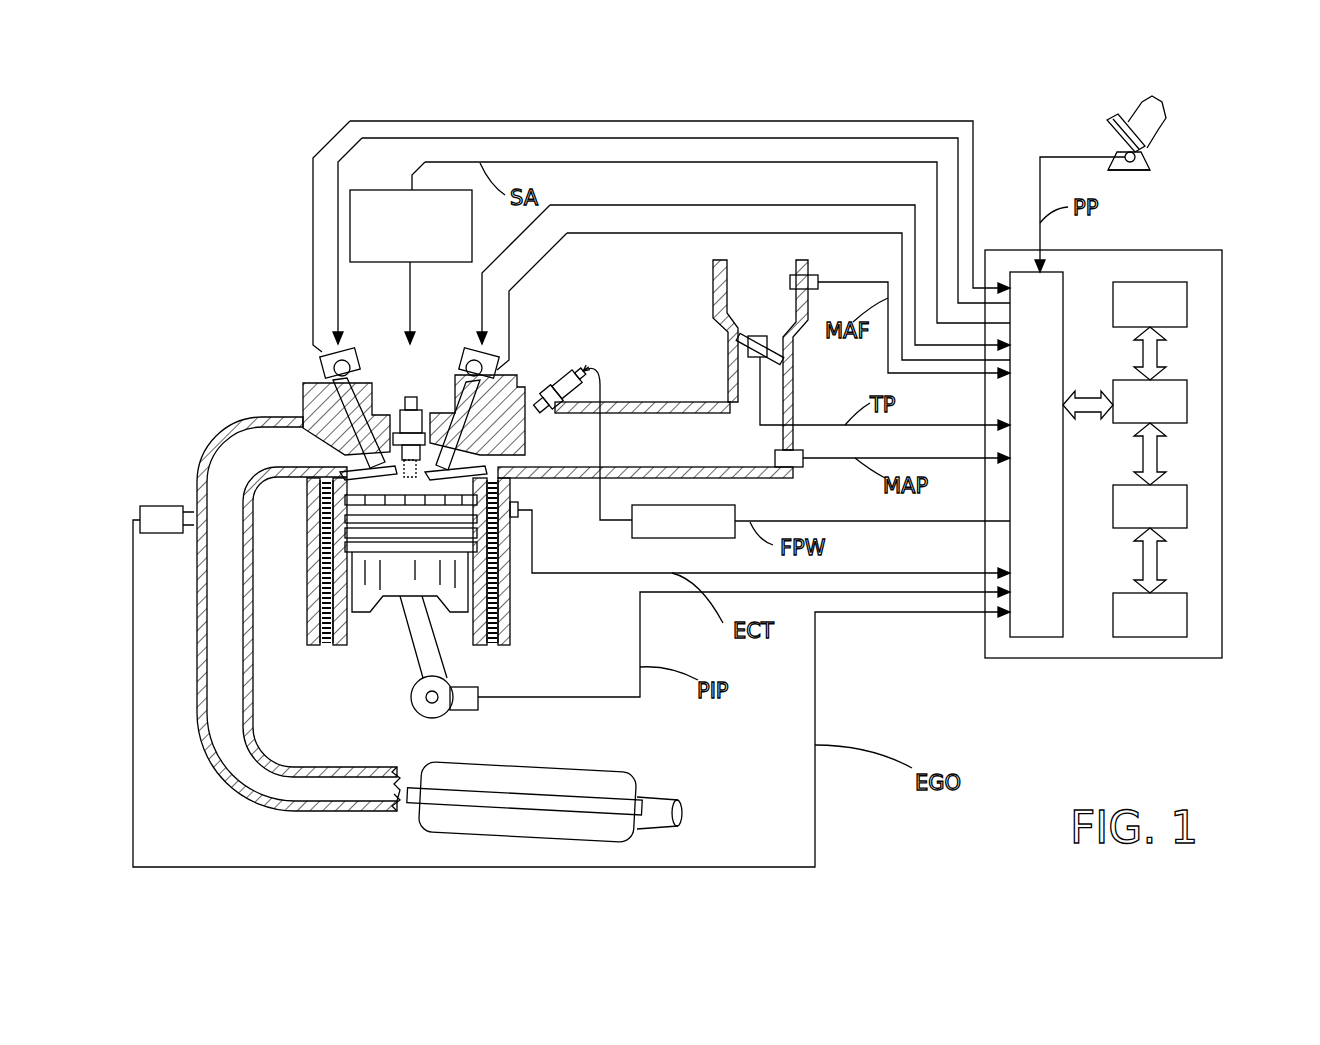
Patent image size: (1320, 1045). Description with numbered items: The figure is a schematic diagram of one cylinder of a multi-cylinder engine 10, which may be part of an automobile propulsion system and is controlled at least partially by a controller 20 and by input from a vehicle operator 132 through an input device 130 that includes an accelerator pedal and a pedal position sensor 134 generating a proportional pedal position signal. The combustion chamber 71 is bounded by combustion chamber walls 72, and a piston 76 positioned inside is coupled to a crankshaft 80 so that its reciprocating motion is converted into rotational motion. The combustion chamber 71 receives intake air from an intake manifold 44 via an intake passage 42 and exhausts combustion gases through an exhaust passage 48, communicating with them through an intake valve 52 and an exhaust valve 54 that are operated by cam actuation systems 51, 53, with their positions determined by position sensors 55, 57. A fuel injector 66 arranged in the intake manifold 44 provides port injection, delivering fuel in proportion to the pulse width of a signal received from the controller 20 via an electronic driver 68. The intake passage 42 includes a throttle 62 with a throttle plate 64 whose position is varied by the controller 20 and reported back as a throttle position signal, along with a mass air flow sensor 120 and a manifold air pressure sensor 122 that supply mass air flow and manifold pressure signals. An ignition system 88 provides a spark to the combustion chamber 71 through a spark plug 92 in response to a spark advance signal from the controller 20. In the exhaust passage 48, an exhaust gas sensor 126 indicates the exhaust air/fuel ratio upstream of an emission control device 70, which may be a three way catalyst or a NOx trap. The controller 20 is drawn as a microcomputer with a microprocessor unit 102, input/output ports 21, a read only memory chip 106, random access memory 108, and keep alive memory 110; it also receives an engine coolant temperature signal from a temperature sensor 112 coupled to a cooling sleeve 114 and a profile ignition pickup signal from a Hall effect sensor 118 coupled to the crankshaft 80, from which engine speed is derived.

The engine 10 is at (232, 333).
The controller 20 is at (1210, 250).
The input/output ports 21 is at (1065, 285).
The intake passage 42 is at (772, 311).
The intake manifold 44 is at (705, 456).
The exhaust passage 48 is at (285, 461).
The cam actuation system 51 is at (463, 347).
The intake valve 52 is at (490, 463).
The cam actuation system 53 is at (360, 343).
The exhaust valve 54 is at (362, 463).
The position sensor 55 is at (497, 366).
The position sensor 57 is at (323, 352).
The throttle 62 is at (792, 340).
The throttle plate 64 is at (740, 340).
The fuel injector 66 is at (555, 385).
The electronic driver 68 is at (634, 540).
The emission control device 70 is at (593, 768).
The combustion chamber 71 is at (408, 487).
The combustion chamber walls 72 is at (350, 630).
The piston 76 is at (412, 603).
The crankshaft 80 is at (422, 720).
The ignition system 88 is at (362, 190).
The spark plug 92 is at (415, 398).
The microprocessor unit 102 is at (1187, 396).
The read only memory chip 106 is at (1187, 300).
The random access memory 108 is at (1187, 505).
The keep alive memory 110 is at (1187, 612).
The temperature sensor 112 is at (527, 508).
The cooling sleeve 114 is at (490, 593).
The Hall effect sensor 118 is at (467, 712).
The mass air flow sensor 120 is at (808, 273).
The manifold air pressure sensor 122 is at (808, 470).
The exhaust gas sensor 126 is at (140, 508).
The input device 130 is at (1107, 132).
The vehicle operator 132 is at (1162, 110).
The pedal position sensor 134 is at (1138, 160).